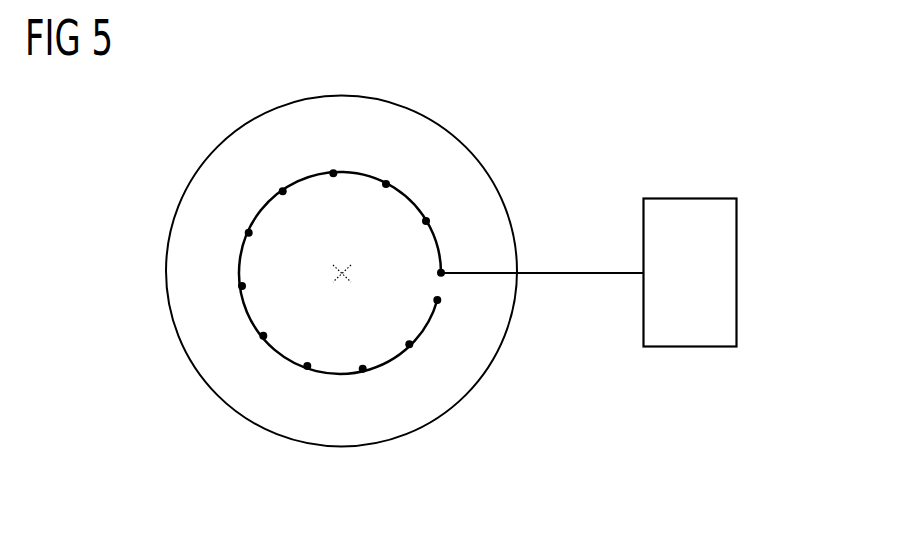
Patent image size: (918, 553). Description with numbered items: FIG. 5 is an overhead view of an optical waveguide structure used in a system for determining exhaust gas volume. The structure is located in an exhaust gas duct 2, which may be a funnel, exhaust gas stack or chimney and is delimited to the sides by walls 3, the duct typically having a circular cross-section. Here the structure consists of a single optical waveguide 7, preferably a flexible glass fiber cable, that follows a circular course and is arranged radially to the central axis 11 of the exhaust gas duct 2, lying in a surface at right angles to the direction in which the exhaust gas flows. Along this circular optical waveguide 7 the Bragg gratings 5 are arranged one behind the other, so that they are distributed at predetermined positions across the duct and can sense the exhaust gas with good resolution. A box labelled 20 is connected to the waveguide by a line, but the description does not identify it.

The exhaust gas duct 2 is at (308, 271).
The walls 3 is at (167, 300).
The Bragg gratings 5 is at (333, 173).
The optical waveguide 7 is at (358, 172).
The central axis 11 is at (344, 273).
The evaluation unit 20 is at (737, 287).